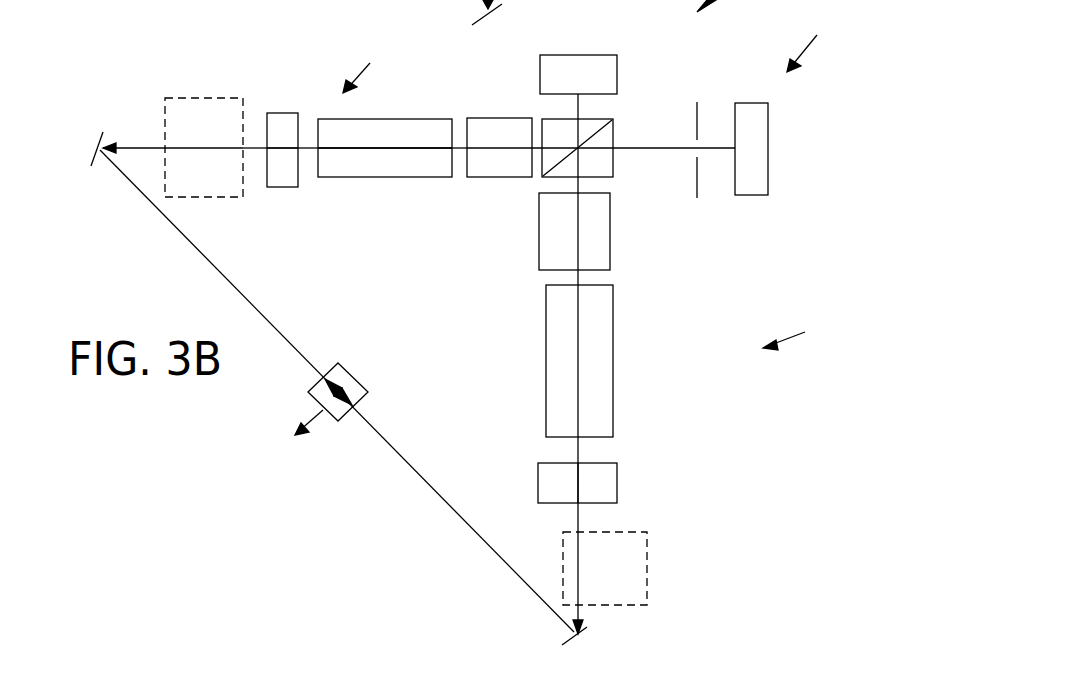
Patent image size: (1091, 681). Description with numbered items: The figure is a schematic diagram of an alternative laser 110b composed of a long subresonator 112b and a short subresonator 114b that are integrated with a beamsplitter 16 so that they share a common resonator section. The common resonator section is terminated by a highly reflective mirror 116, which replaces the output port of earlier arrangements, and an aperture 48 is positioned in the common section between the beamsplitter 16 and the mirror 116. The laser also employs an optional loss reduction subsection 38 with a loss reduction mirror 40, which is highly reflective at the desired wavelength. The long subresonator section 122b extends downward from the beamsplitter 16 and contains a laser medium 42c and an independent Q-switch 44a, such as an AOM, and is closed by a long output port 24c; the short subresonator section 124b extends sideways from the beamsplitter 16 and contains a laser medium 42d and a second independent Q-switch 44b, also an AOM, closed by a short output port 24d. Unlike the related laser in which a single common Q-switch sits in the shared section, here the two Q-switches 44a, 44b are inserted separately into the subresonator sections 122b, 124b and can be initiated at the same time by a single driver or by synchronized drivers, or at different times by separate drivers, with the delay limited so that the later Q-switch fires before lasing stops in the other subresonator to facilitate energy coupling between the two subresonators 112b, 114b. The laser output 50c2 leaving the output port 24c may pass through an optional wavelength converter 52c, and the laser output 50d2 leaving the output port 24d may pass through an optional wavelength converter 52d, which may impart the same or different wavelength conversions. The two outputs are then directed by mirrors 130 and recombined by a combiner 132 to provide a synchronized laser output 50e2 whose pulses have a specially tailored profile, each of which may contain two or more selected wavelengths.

The mirrors 130 is at (103, 143).
The wavelength converter 52d is at (187, 95).
The short output port 24d is at (290, 113).
The short subresonator 114b is at (381, 63).
The laser output 50d2 is at (260, 150).
The short subresonator section 124b is at (310, 153).
The laser medium 42d is at (380, 178).
The Q-switch 44b is at (488, 118).
The beamsplitter 16 is at (547, 118).
The loss reduction mirror 40 is at (572, 55).
The loss reduction subsection 38 is at (580, 112).
The aperture 48 is at (693, 118).
The highly reflective mirror 116 is at (753, 103).
The laser 110b is at (826, 40).
The Q-switch 44a is at (610, 237).
The laser medium 42c is at (613, 333).
The long subresonator 112b is at (815, 332).
The long subresonator section 122b is at (577, 453).
The laser output 50c2 is at (575, 517).
The long output port 24c is at (617, 480).
The wavelength converter 52c is at (648, 556).
The combiner 132 is at (355, 377).
The laser output 50e2 is at (318, 417).